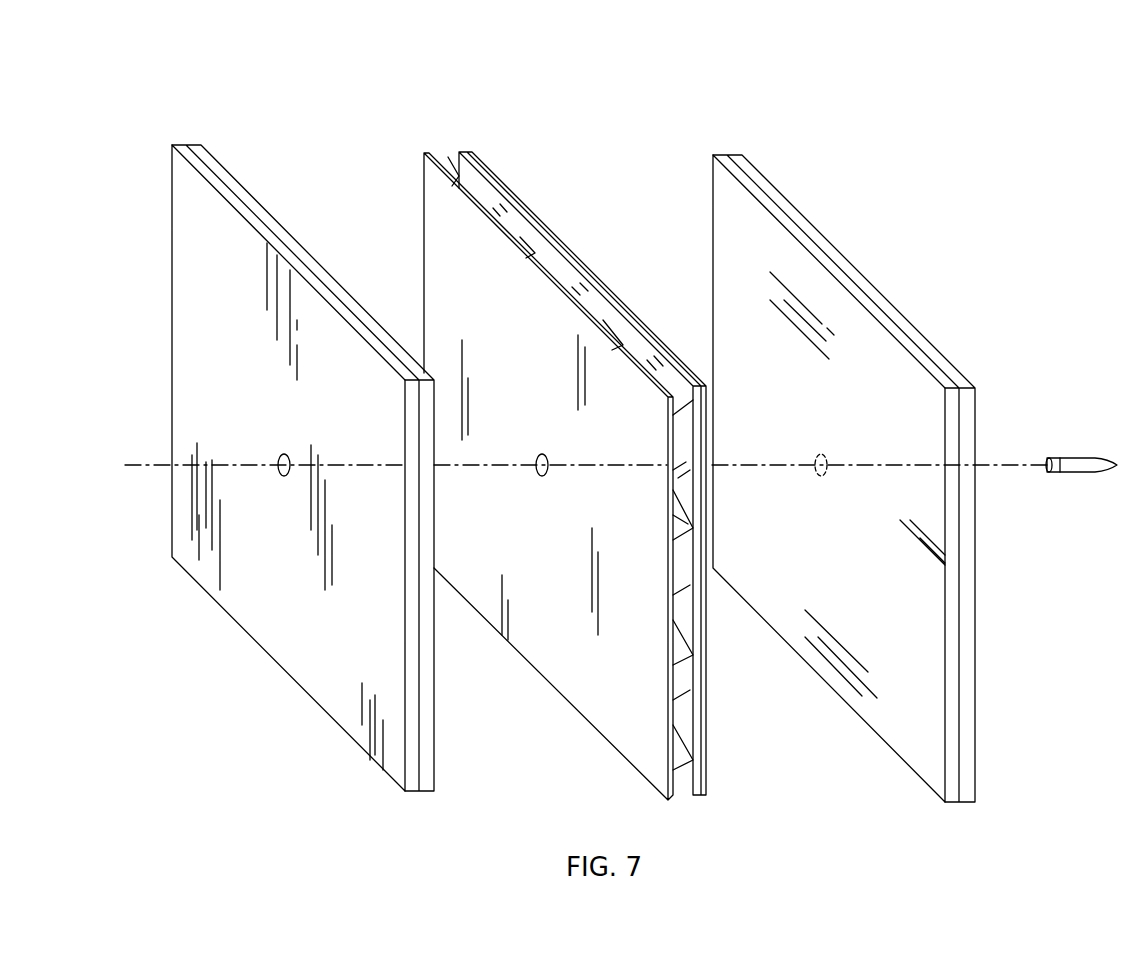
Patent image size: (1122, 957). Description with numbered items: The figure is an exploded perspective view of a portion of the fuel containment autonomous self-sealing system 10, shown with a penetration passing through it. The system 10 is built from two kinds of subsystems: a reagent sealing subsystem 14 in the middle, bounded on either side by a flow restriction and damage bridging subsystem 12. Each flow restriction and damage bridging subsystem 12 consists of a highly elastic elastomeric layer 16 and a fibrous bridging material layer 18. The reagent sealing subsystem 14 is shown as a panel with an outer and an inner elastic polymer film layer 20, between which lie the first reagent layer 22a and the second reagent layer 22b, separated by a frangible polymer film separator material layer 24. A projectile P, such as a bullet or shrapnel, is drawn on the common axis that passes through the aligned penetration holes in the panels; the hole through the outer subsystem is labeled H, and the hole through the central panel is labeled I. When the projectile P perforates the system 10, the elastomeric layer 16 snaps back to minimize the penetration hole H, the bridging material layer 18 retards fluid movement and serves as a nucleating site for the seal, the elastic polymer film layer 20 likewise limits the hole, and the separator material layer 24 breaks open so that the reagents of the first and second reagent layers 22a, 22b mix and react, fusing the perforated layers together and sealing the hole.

The fuel containment autonomous self-sealing system 10 is at (664, 97).
The flow restriction and damage bridging subsystem 12 is at (152, 226).
The reagent sealing subsystem 14 is at (437, 147).
The elastomeric layer 16 is at (172, 332).
The bridging material layer 18 is at (236, 178).
The elastic polymer film layer 20 is at (442, 203).
The first reagent layer 22a is at (604, 322).
The second reagent layer 22b is at (570, 463).
The polymer film separator material layer 24 is at (645, 358).
The penetration hole H is at (284, 477).
The hole I is at (542, 477).
The projectile P is at (1076, 462).